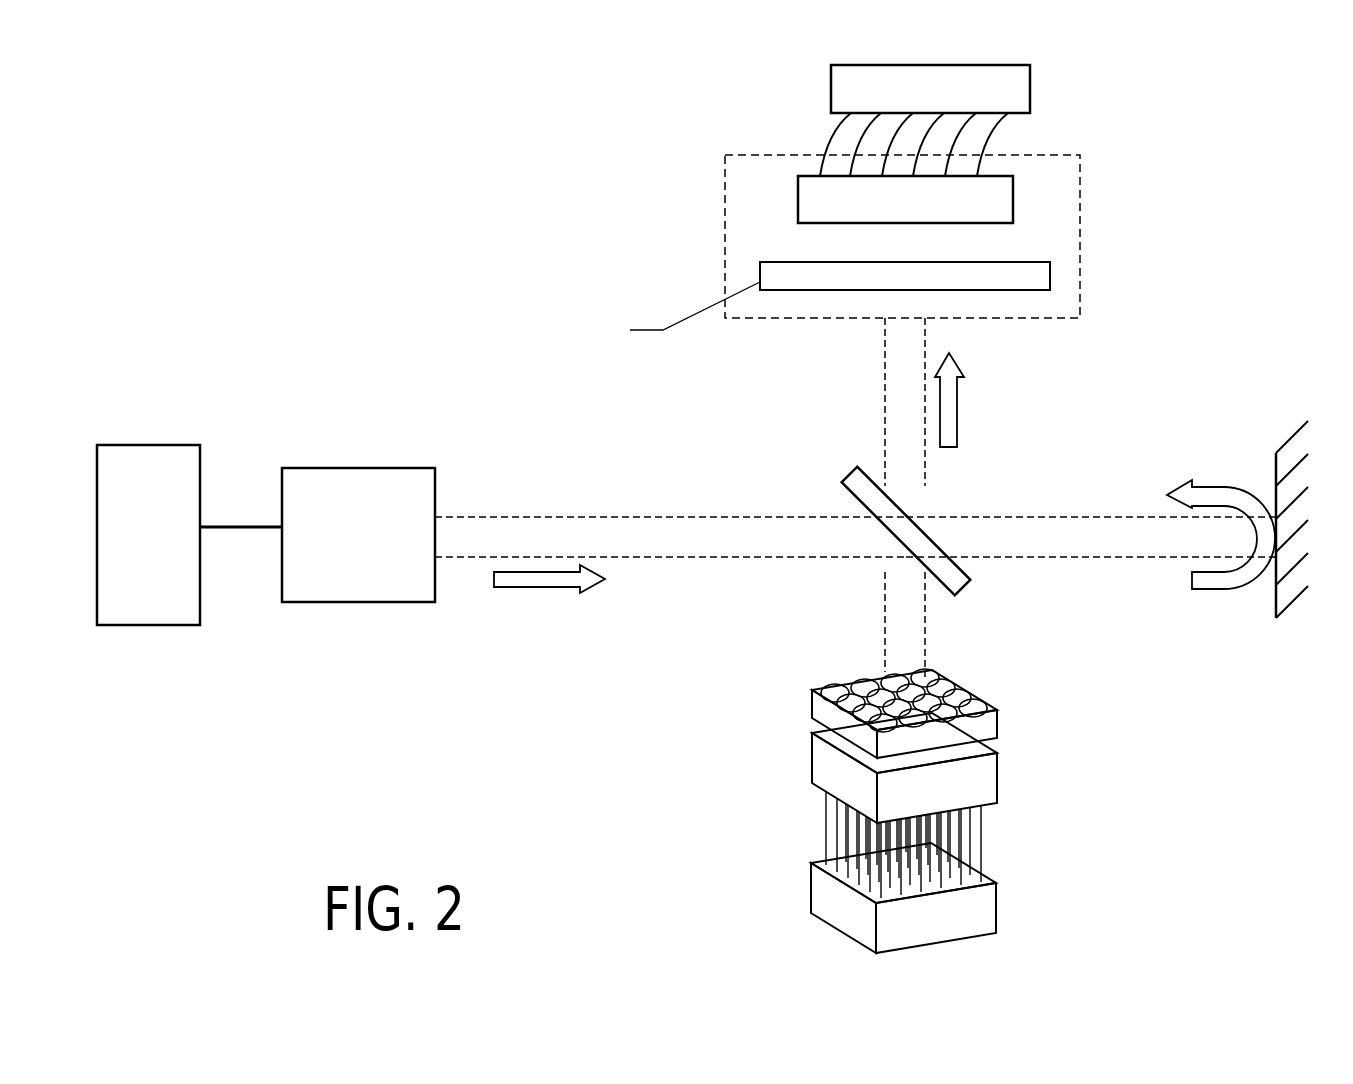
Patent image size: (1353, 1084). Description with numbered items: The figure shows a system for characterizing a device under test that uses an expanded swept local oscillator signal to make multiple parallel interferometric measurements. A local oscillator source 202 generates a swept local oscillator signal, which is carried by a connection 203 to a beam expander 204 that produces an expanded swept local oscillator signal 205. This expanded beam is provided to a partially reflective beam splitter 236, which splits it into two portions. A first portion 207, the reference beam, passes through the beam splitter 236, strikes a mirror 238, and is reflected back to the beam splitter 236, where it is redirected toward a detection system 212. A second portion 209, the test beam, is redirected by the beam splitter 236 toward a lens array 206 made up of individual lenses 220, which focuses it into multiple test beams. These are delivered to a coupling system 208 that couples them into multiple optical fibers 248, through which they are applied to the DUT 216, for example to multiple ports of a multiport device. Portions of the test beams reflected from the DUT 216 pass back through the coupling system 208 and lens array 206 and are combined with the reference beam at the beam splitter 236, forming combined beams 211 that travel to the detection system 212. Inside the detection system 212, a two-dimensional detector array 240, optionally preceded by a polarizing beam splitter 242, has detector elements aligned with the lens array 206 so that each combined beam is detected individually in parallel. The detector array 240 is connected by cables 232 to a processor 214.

The local oscillator source 202 is at (148, 445).
The connection between LO source and beam expander 203 is at (243, 530).
The beam expander 204 is at (357, 468).
The expanded swept local oscillator signal 205 is at (485, 517).
The first portion of the expanded swept local oscillator signal 207 is at (1078, 517).
The second portion of the expanded swept local oscillator signal 209 is at (925, 630).
The combined beams 211 is at (885, 368).
The detection system 212 is at (725, 232).
The processor 214 is at (1030, 88).
The DUT 216 is at (997, 906).
The lens 220 is at (860, 674).
The lens array 206 is at (925, 692).
The coupling system 208 is at (997, 778).
The cables between detector array and processor 232 is at (830, 136).
The beam splitter 236 is at (848, 474).
The mirror 238 is at (1297, 603).
The detector array 240 is at (1013, 197).
The polarizing beam splitter 242 is at (1050, 275).
The optical fibers 248 is at (797, 822).